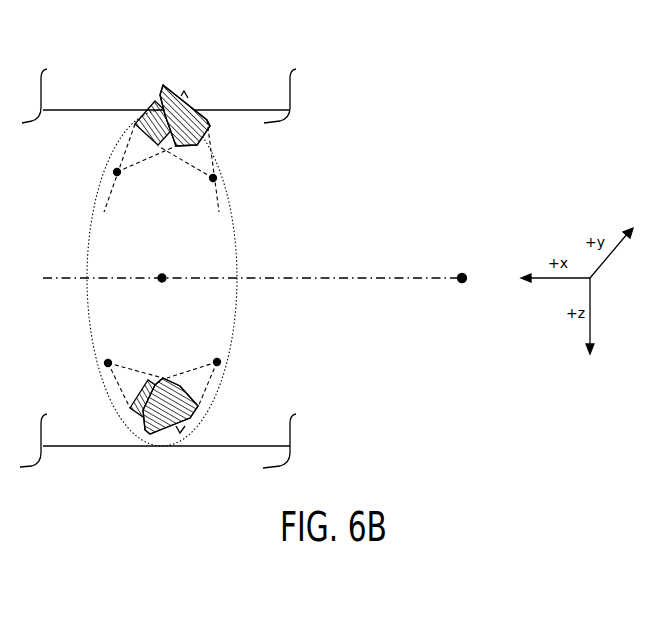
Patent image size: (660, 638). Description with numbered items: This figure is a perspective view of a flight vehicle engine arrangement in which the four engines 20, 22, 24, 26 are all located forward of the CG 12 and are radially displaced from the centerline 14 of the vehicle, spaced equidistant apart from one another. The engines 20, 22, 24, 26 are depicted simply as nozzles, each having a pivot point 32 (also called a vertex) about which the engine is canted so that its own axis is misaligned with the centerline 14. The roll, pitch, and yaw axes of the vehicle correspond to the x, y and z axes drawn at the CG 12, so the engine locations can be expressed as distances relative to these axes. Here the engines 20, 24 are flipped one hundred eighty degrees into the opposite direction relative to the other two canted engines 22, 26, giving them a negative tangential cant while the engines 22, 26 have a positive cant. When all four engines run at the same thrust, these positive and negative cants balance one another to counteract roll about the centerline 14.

The CG 12 is at (462, 278).
The centerline 14 is at (345, 278).
The engine 20 is at (200, 149).
The engine 22 is at (202, 380).
The engine 24 is at (128, 382).
The engine 26 is at (130, 149).
The pivot point 32 is at (117, 172).